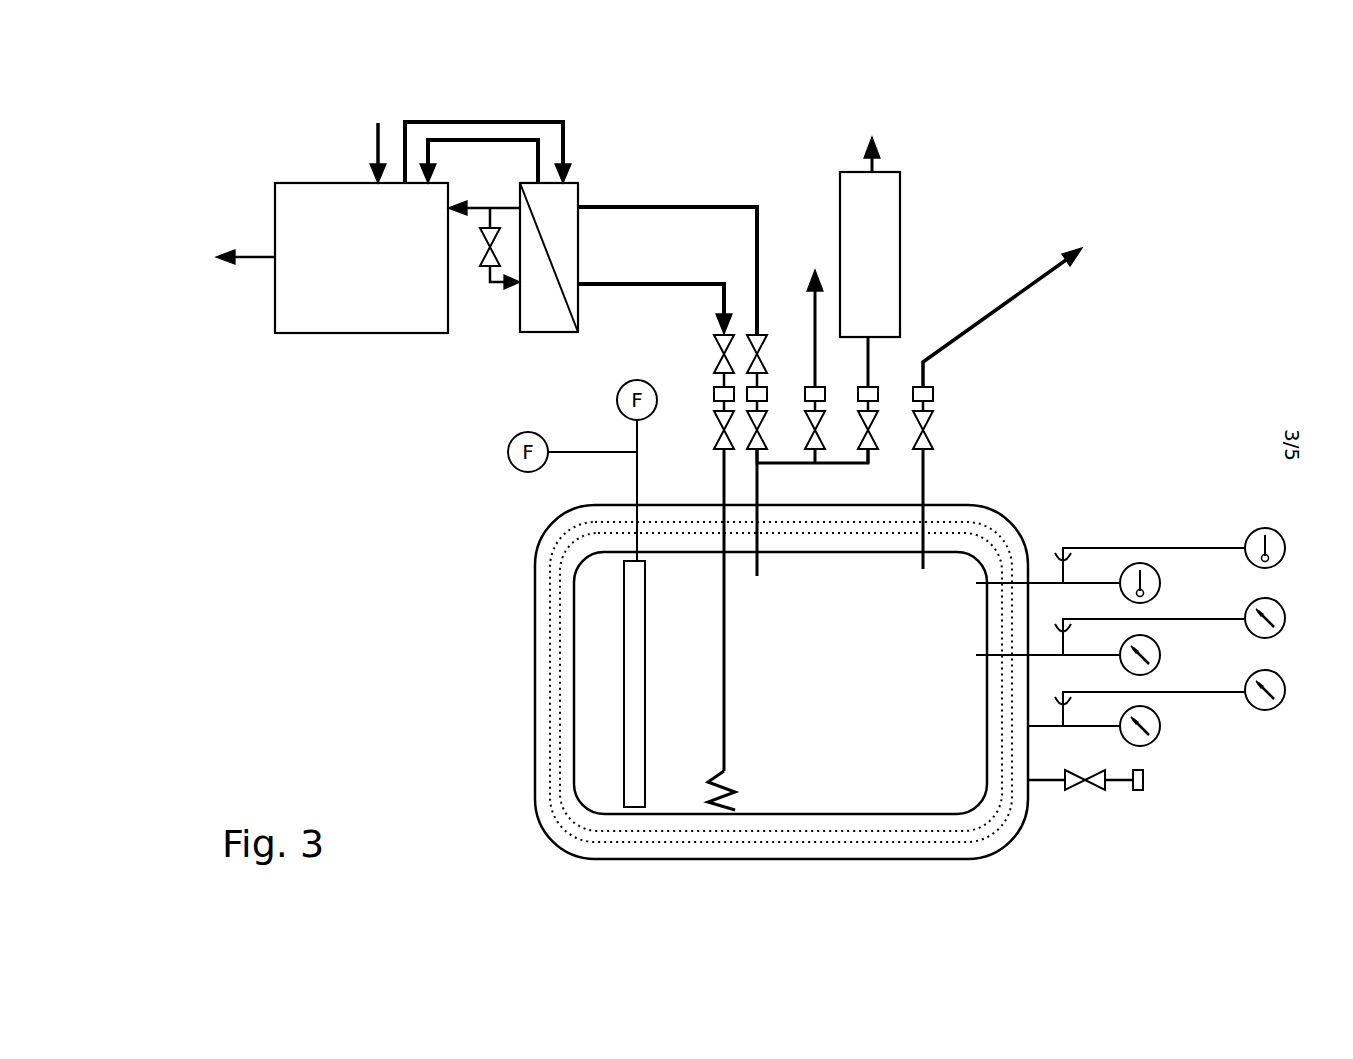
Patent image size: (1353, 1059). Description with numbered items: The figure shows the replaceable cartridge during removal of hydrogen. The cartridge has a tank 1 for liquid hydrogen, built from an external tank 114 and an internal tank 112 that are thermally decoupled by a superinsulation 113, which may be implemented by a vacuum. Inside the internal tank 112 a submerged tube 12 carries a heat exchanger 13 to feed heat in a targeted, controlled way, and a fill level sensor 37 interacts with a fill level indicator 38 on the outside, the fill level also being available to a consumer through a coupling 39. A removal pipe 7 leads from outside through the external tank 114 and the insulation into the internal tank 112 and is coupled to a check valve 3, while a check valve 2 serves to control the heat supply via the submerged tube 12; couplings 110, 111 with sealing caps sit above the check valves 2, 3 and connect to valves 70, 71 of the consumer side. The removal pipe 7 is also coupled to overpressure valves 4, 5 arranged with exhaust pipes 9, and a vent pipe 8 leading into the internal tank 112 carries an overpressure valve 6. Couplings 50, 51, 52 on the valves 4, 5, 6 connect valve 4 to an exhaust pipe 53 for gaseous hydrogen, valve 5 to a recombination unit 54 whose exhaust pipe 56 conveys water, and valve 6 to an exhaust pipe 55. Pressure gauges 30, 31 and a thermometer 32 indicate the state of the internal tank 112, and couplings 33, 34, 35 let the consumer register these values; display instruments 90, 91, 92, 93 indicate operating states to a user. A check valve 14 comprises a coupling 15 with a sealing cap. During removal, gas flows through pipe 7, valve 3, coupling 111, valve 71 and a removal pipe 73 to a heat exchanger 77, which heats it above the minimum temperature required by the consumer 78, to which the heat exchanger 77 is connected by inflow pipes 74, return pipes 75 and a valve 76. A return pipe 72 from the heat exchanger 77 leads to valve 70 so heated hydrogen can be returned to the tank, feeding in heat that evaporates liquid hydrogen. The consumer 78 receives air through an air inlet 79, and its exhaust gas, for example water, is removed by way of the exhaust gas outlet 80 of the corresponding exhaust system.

The tank 1 is at (751, 667).
The check valve 2 is at (716, 438).
The check valve 3 is at (768, 434).
The overpressure valve 4 is at (826, 436).
The overpressure valve 5 is at (878, 436).
The overpressure valve 6 is at (932, 436).
The removal pipe 7 is at (760, 571).
The vent pipe 8 is at (916, 564).
The exhaust pipes 9 is at (862, 436).
The submerged tube 12 is at (726, 690).
The heat exchanger 13 is at (735, 776).
The check valve 14 is at (1086, 793).
The coupling 15 is at (1145, 786).
The pressure gauge 30 is at (1160, 732).
The pressure gauge 31 is at (1160, 660).
The thermometer 32 is at (1160, 588).
The coupling 33 is at (1064, 691).
The coupling 34 is at (1064, 618).
The coupling 35 is at (1064, 547).
The fill level sensor 37 is at (646, 655).
The fill level indicator 38 is at (627, 384).
The coupling 39 is at (597, 448).
The coupling 50 is at (822, 388).
The coupling 51 is at (875, 388).
The coupling 52 is at (936, 390).
The exhaust pipe 53 is at (806, 308).
The recombination unit 54 is at (902, 226).
The exhaust pipe 55 is at (993, 314).
The exhaust pipe 56 is at (884, 162).
The valve 70 is at (712, 352).
The valve 71 is at (765, 340).
The return pipe 72 is at (653, 285).
The removal pipe 73 is at (730, 206).
The inflow pipes 74 is at (494, 121).
The return pipes 75 is at (490, 141).
The valve 76 is at (486, 262).
The heat exchanger 77 is at (540, 333).
The consumer 78 is at (360, 334).
The air inlet 79 is at (375, 140).
The exhaust gas outlet 80 is at (256, 255).
The display instrument 90 is at (508, 452).
The display instrument 91 is at (1285, 697).
The display instrument 92 is at (1285, 624).
The display instrument 93 is at (1285, 553).
The coupling 110 is at (712, 396).
The coupling 111 is at (770, 390).
The internal tank 112 is at (868, 812).
The superinsulation 113 is at (548, 653).
The external tank 114 is at (535, 712).